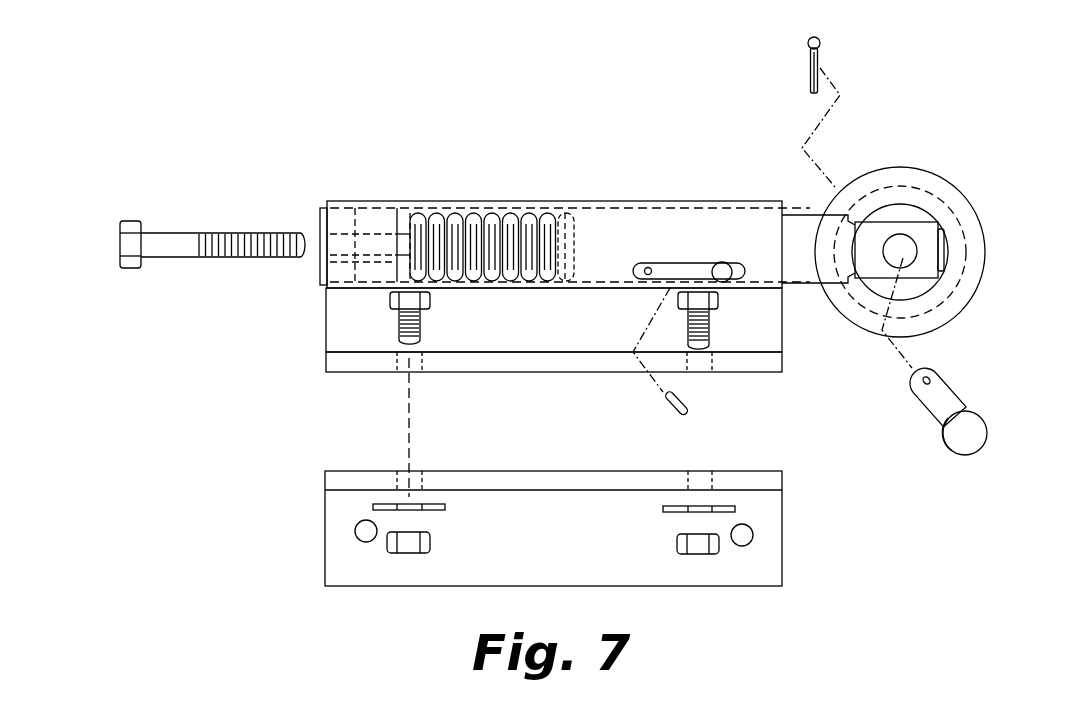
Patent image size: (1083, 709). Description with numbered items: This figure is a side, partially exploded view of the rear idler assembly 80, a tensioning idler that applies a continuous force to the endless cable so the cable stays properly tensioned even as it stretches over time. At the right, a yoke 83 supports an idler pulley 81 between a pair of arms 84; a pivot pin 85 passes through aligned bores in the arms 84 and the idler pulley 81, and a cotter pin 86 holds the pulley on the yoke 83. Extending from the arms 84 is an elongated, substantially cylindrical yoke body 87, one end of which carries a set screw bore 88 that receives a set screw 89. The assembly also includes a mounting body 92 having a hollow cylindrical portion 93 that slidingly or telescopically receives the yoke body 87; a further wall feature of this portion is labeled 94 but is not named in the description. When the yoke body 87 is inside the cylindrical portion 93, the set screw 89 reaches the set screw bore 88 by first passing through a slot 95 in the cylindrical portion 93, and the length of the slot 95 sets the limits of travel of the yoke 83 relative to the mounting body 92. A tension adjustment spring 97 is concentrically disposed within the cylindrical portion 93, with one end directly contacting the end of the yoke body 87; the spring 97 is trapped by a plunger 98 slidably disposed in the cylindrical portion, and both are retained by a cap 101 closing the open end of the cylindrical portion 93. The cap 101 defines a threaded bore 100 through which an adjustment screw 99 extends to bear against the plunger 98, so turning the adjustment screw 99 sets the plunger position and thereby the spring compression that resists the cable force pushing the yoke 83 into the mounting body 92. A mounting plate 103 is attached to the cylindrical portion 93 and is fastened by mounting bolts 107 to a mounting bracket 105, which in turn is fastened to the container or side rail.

The rear idler assembly 80 is at (384, 178).
The idler pulley 81 is at (945, 183).
The yoke 83 is at (806, 270).
The arms 84 is at (872, 232).
The pivot pin 85 is at (930, 405).
The cotter pin 86 is at (806, 68).
The yoke body 87 is at (695, 263).
The set screw bore 88 is at (648, 267).
The set screw 89 is at (665, 403).
The mounting body 92 is at (338, 312).
The cylindrical portion 93 is at (517, 206).
The housing wall 94 is at (742, 210).
The slot 95 is at (720, 280).
The tension adjustment spring 97 is at (455, 232).
The plunger 98 is at (380, 263).
The adjustment screw 99 is at (220, 233).
The threaded bore 100 is at (332, 237).
The cap 101 is at (326, 207).
The mounting plate 103 is at (338, 342).
The mounting bracket 105 is at (338, 530).
The mounting bolts 107 is at (420, 328).